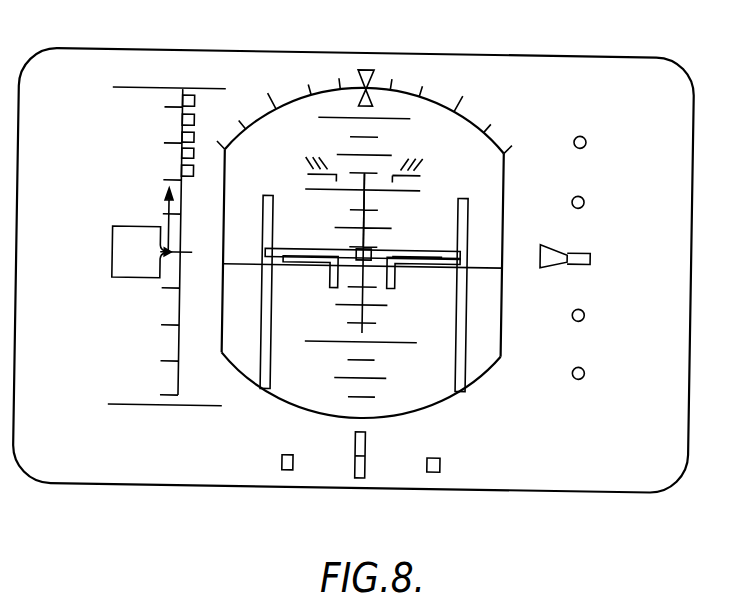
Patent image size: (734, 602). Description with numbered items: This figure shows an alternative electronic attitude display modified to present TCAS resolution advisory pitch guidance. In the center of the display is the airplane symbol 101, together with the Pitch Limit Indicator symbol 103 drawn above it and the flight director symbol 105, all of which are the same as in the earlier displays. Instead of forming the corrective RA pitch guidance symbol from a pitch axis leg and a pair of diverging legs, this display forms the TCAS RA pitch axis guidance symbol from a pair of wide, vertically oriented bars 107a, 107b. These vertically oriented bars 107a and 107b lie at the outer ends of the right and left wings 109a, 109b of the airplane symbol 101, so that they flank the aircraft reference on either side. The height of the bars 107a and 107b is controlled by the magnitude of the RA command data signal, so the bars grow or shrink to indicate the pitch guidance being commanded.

The airplane symbol 101 is at (395, 244).
The Pitch Limit Indicator (PLI) symbol 103 is at (403, 156).
The flight director symbol 105 is at (378, 243).
The vertically oriented bar 107a is at (263, 334).
The vertically oriented bar 107b is at (468, 306).
The right wing 109a is at (300, 263).
The left wing 109b is at (364, 333).